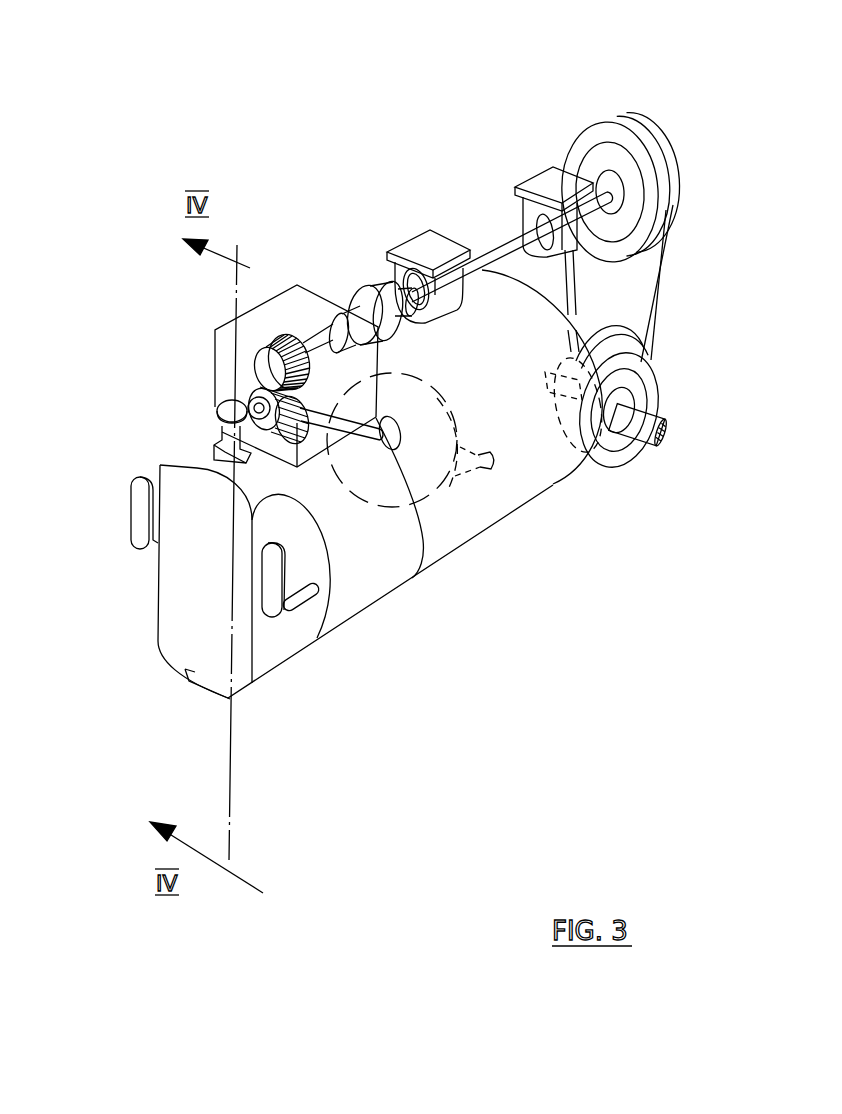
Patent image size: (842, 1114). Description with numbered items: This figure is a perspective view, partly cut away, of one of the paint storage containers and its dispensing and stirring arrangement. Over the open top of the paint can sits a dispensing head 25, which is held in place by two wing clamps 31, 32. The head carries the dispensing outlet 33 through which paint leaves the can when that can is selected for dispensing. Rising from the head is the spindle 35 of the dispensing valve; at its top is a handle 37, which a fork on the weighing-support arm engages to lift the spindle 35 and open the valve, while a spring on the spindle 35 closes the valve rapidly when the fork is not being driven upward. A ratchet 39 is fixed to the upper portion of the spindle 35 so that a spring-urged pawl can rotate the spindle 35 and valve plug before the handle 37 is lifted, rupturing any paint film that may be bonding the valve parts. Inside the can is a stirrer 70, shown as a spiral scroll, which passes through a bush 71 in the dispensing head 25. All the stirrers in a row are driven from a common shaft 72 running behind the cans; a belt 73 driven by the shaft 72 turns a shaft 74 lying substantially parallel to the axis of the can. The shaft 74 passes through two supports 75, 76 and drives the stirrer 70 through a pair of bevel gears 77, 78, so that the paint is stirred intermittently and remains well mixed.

The dispensing head 25 is at (363, 578).
The wing clamp 31 is at (137, 535).
The wing clamp 32 is at (272, 608).
The dispensing outlet 33 is at (199, 681).
The spindle 35 is at (232, 433).
The handle 37 is at (232, 412).
The ratchet 39 is at (230, 432).
The stirrer 70 is at (425, 442).
The bush 71 is at (342, 430).
The common shaft 72 is at (642, 428).
The belt 73 is at (657, 308).
The shaft 74 is at (496, 253).
The support 75 is at (427, 244).
The support 76 is at (545, 180).
The bevel gear 77 is at (278, 343).
The bevel gear 78 is at (268, 395).